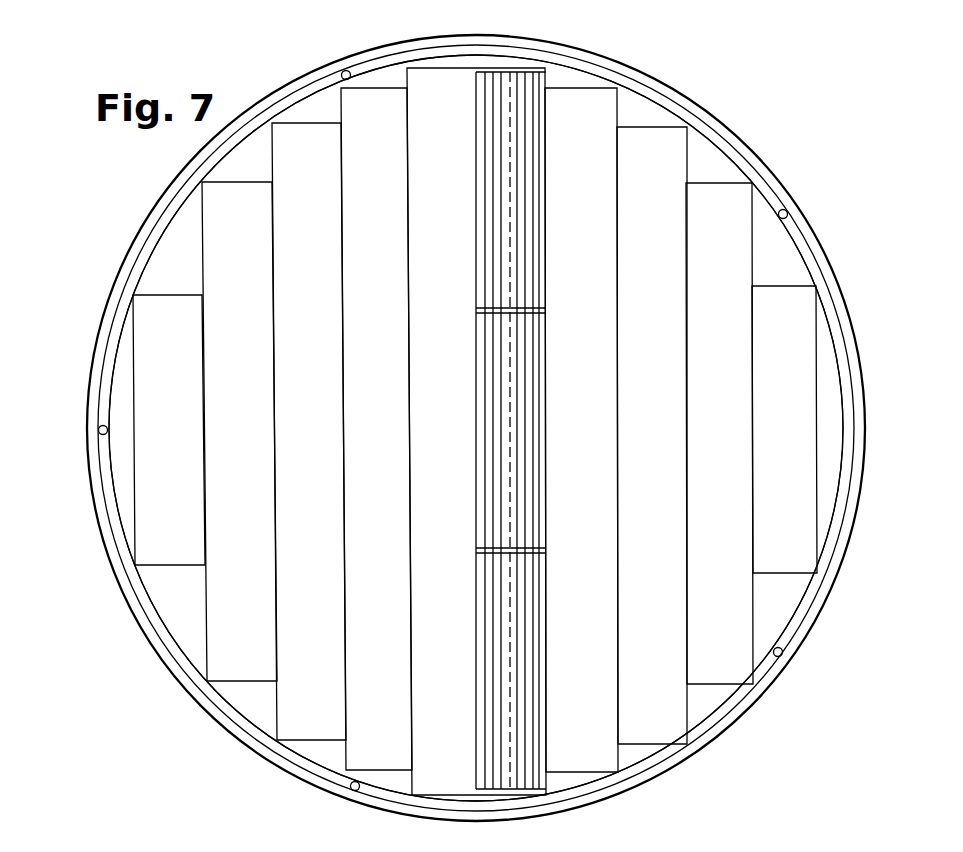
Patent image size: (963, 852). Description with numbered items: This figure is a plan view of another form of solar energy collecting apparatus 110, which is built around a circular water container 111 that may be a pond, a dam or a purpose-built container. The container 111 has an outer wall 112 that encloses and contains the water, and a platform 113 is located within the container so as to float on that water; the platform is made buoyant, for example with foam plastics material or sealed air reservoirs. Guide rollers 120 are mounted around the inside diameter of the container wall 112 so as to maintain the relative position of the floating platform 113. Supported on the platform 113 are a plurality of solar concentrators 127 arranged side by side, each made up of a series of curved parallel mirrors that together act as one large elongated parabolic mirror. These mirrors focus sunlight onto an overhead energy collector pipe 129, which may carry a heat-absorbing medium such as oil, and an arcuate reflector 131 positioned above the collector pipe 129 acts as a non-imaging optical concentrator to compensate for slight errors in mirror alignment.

The solar energy collecting apparatus 110 is at (866, 525).
The circular water container 111 is at (811, 219).
The outer wall 112 is at (822, 606).
The platform 113 is at (833, 376).
The guide rollers 120 is at (101, 436).
The solar concentrators 127 is at (184, 391).
The energy collector pipe 129 is at (517, 777).
The arcuate reflector 131 is at (515, 160).